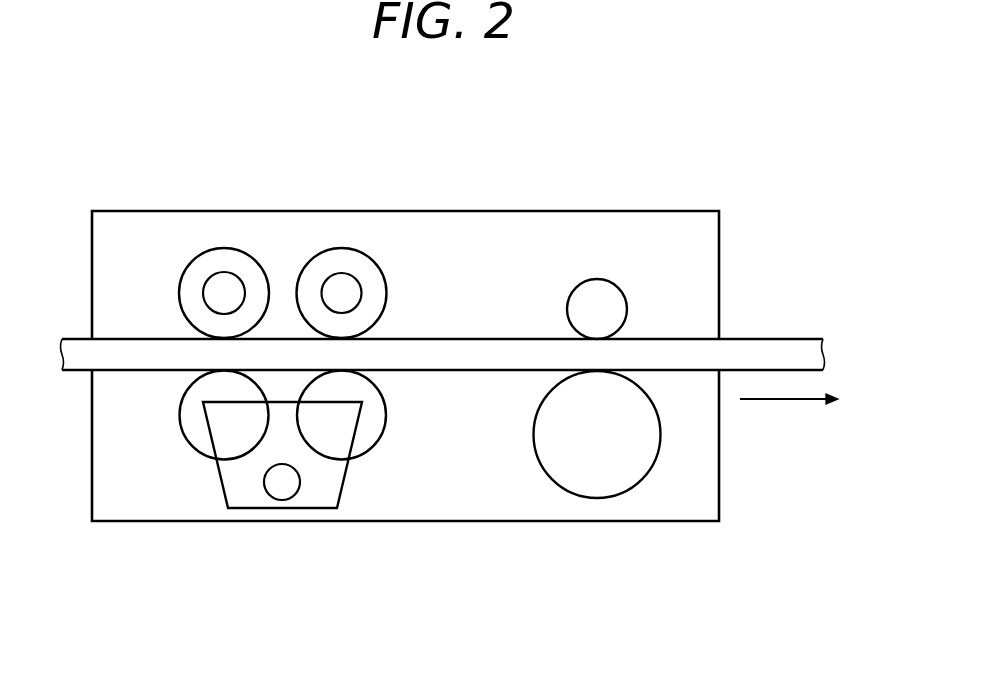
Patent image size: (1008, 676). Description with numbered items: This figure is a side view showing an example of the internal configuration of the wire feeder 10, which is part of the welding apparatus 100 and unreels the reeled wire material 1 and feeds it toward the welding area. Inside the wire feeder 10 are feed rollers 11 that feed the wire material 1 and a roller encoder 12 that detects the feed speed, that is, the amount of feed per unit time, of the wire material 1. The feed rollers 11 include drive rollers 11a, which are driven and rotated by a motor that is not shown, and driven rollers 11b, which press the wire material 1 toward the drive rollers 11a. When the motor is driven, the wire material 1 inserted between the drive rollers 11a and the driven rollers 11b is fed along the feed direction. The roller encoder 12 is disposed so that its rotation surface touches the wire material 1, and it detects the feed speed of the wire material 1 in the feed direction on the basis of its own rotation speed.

The welding apparatus 100 is at (749, 153).
The wire feeder 10 is at (676, 211).
The wire material 1 is at (772, 337).
The feed rollers 11 is at (282, 526).
The drive rollers 11a is at (282, 255).
The driven rollers 11b is at (178, 440).
The roller encoder 12 is at (649, 480).